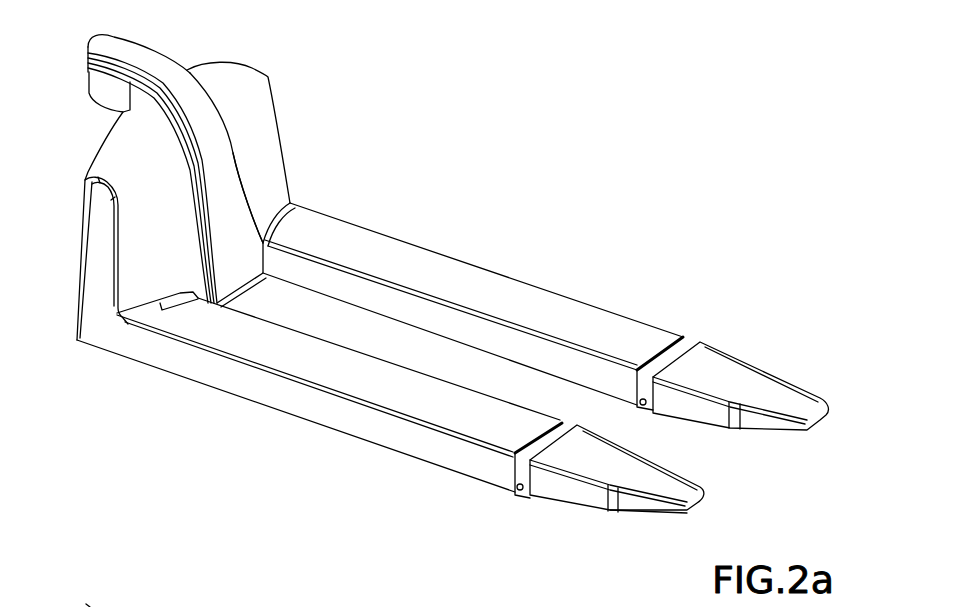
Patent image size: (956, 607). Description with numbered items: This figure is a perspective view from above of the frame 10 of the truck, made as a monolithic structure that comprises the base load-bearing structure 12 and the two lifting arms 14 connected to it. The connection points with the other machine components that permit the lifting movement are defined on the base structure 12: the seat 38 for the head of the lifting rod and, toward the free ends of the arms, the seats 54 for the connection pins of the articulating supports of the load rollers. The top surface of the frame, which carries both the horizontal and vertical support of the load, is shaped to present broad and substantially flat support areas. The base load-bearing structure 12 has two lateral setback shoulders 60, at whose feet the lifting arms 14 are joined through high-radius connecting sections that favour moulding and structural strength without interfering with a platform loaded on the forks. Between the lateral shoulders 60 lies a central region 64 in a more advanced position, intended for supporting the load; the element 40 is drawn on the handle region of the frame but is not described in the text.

The frame 10 is at (623, 160).
The base load-bearing structure 12 is at (270, 74).
The lifting arms 14 is at (477, 264).
The seat for the head of the lifting rod 38 is at (88, 606).
The handle grip 40 is at (120, 62).
The seats for the connection pins 54 is at (648, 413).
The lateral setback shoulders 60 is at (128, 160).
The central region 64 is at (224, 207).